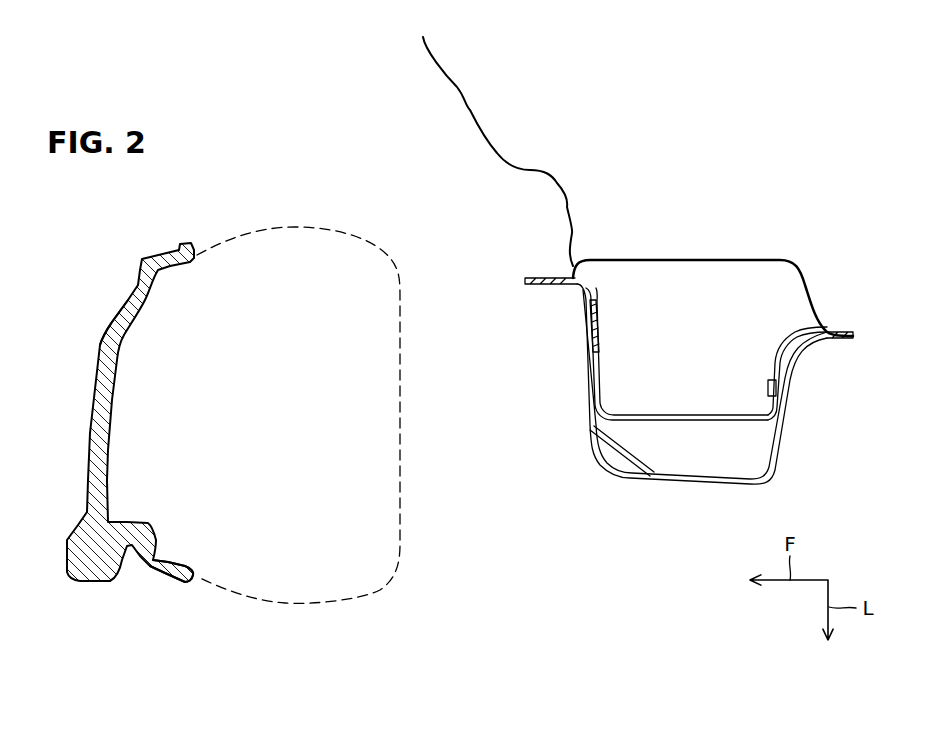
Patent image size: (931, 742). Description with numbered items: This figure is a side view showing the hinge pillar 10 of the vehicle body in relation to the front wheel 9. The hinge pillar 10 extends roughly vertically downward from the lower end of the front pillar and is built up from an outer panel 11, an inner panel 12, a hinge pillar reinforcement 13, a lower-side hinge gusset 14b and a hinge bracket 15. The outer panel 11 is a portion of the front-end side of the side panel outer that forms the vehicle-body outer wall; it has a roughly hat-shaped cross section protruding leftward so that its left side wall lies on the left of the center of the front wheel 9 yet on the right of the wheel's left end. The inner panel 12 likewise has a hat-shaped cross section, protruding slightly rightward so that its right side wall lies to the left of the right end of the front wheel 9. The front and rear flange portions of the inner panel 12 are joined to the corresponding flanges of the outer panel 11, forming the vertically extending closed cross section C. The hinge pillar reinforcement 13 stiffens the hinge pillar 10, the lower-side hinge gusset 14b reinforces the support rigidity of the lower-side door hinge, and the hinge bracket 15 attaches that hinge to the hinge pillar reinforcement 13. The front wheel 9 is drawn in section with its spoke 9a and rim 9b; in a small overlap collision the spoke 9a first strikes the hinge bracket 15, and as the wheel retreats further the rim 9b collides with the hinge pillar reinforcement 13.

The front wheel 9 is at (210, 224).
The spoke 9a is at (169, 578).
The rim 9b is at (99, 376).
The hinge pillar 10 is at (830, 279).
The outer panel 11 is at (805, 399).
The inner panel 12 is at (651, 258).
The hinge pillar reinforcement 13 is at (765, 357).
The lower-side hinge gusset 14b is at (598, 319).
The hinge bracket 15 is at (611, 452).
The closed cross section C is at (704, 325).